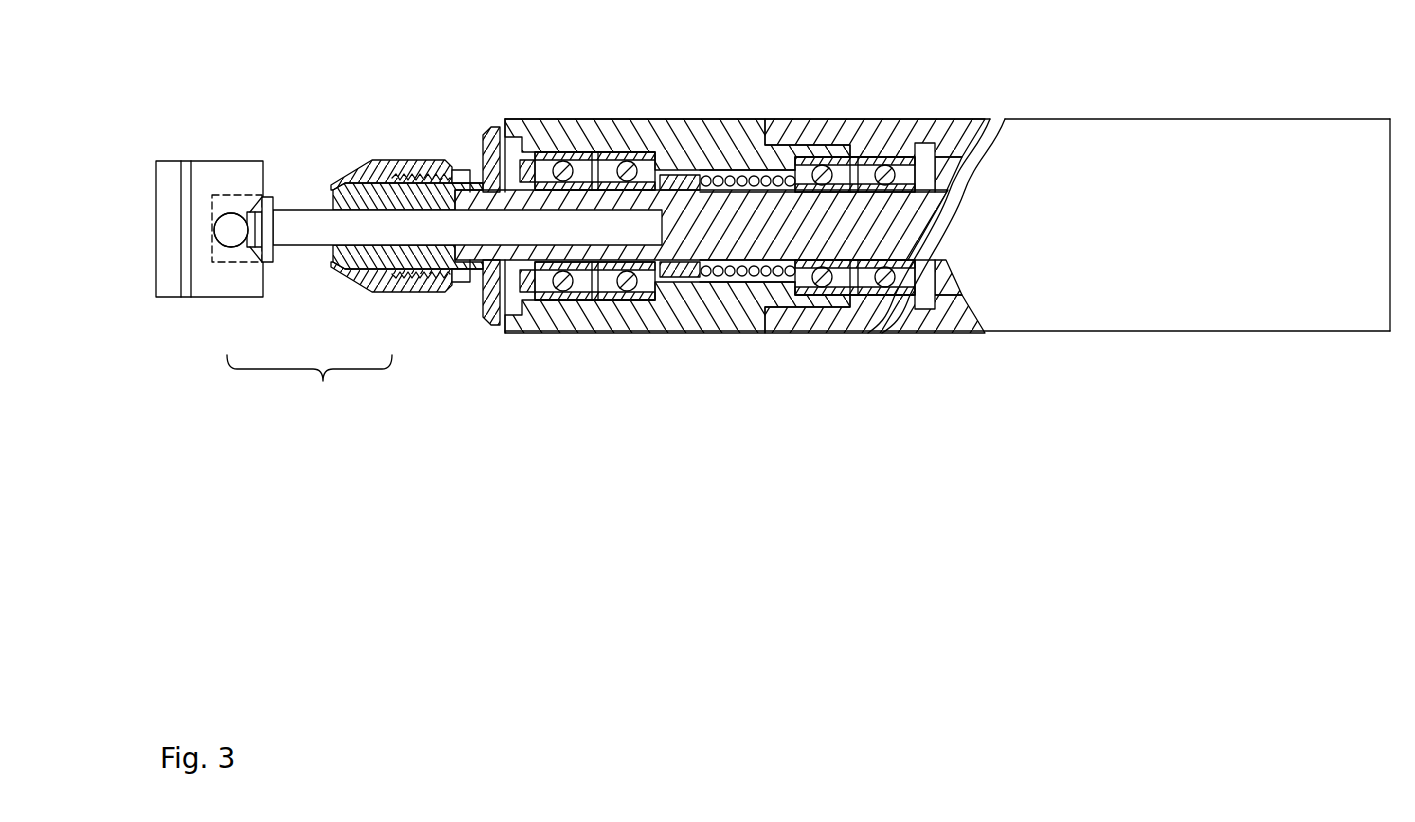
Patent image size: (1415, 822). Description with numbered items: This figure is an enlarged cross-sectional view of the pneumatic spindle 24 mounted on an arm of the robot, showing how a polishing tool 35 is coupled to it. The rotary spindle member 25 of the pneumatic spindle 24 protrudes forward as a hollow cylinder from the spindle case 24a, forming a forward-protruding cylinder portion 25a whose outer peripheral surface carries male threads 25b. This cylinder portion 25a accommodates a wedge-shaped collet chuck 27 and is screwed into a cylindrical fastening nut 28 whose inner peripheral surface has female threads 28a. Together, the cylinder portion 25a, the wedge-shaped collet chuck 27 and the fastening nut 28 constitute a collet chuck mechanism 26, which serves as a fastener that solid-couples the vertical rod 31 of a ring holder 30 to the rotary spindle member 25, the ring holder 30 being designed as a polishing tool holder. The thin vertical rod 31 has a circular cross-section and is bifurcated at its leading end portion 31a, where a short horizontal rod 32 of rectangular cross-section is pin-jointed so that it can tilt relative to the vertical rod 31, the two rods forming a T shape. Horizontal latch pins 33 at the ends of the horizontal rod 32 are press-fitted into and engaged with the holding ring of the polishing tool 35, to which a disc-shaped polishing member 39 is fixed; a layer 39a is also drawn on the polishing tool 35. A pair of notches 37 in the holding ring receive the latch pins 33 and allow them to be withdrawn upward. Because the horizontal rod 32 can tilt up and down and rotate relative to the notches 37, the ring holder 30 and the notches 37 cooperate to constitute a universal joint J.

The pneumatic spindle 24 is at (874, 117).
The spindle case 24a is at (666, 119).
The rotary spindle member 25 is at (756, 240).
The forward-protruding cylinder portion 25a is at (372, 158).
The male threads 25b is at (418, 160).
The collet chuck mechanism 26 is at (446, 305).
The wedge-shaped collet chuck 27 is at (438, 296).
The cylindrical fastening nut 28 is at (440, 158).
The female threads 28a is at (462, 160).
The ring holder 30 is at (309, 388).
The vertical rod 31 is at (305, 247).
The leading end portion of the vertical rod 31a is at (276, 205).
The horizontal rod 32 is at (238, 250).
The horizontal latch pins 33 is at (231, 230).
The polishing tool 35 is at (190, 157).
The notches 37 is at (233, 214).
The disc-shaped polishing member 39 is at (162, 297).
The block plate layer 39a is at (189, 297).
The universal joint J is at (210, 231).